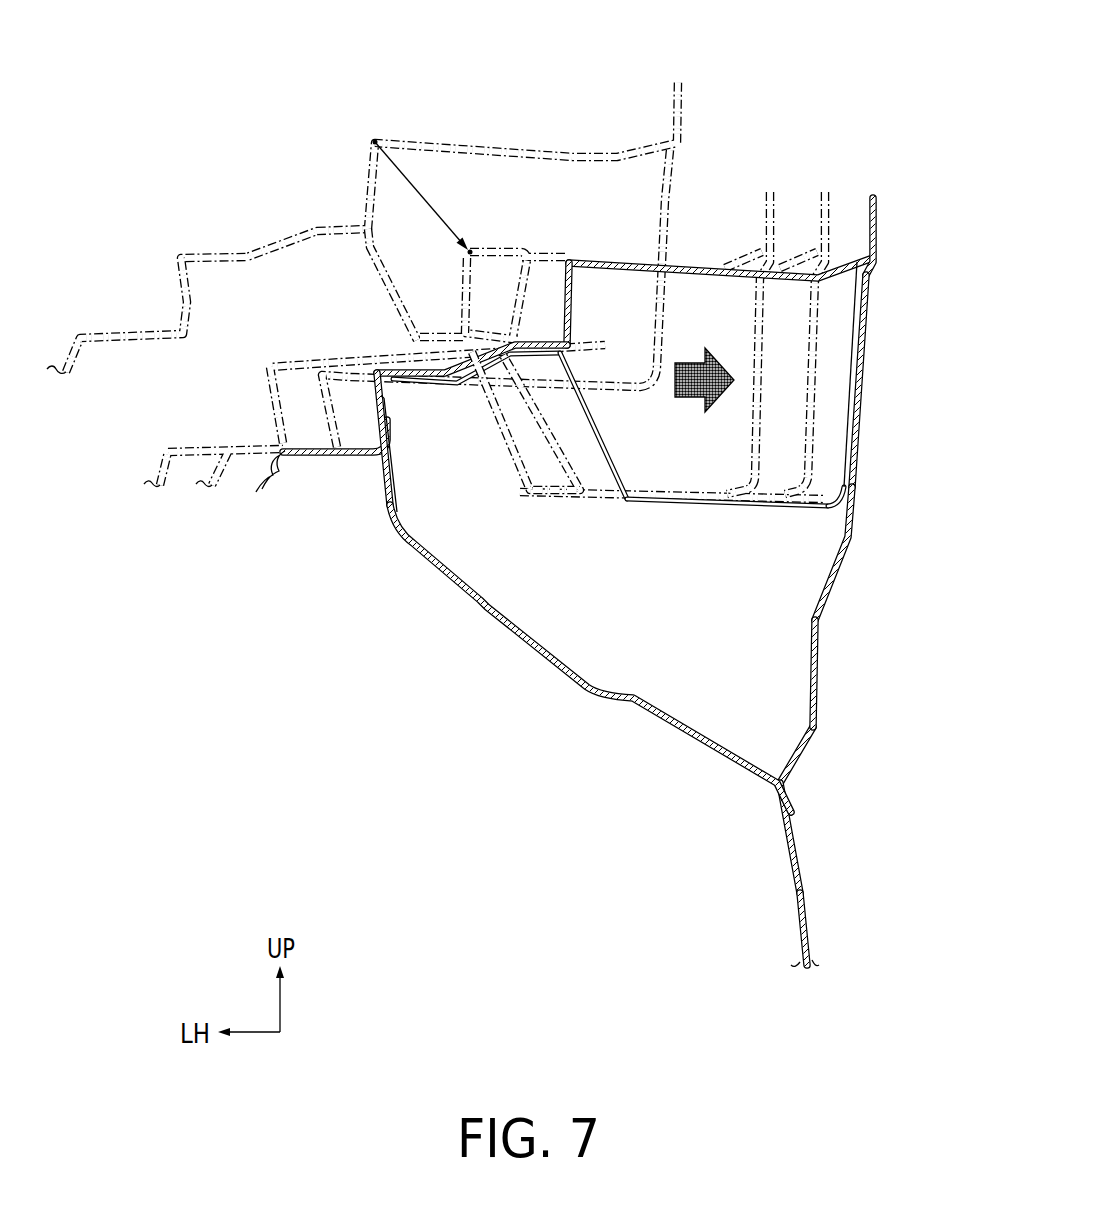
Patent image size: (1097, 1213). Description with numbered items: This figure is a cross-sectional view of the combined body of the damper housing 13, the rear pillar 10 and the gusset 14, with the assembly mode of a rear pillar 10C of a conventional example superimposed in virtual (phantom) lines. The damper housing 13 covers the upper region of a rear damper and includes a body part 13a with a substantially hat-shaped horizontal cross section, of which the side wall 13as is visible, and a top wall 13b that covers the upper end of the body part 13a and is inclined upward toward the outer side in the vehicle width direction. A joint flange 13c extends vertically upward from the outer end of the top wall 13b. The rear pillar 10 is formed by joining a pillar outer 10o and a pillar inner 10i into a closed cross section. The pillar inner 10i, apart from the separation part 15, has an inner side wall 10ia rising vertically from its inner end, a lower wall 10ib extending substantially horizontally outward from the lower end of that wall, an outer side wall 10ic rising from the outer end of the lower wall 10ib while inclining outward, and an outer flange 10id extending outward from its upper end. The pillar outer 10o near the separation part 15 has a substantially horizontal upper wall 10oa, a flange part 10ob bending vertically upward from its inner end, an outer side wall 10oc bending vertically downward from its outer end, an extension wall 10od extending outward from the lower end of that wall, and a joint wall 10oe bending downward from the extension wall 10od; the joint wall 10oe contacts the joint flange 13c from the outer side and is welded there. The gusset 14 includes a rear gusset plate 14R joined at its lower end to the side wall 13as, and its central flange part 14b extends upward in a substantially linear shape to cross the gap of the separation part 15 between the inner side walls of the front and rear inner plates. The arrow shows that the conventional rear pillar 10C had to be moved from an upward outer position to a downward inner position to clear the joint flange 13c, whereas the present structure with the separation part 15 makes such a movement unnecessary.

The rear pillar 10 is at (614, 351).
The rear pillar of conventional example 10C is at (575, 148).
The pillar outer 10o is at (582, 339).
The upper wall 10oa is at (627, 262).
The flange part 10ob is at (867, 226).
The outer side wall 10oc is at (567, 303).
The extension wall 10od is at (537, 340).
The joint wall 10oe is at (380, 425).
The pillar inner 10i is at (683, 459).
The inner side wall 10ia is at (860, 383).
The lower wall 10ib is at (723, 510).
The outer side wall 10ic is at (603, 467).
The outer flange 10id is at (510, 400).
The damper housing 13 is at (659, 674).
The body part 13a is at (866, 934).
The side wall 13as is at (866, 934).
The top wall 13b is at (622, 692).
The joint flange 13c is at (398, 430).
The gusset 14 is at (871, 492).
The central flange part 14b is at (880, 229).
The rear gusset plate 14R is at (820, 668).
The separation part 15 is at (822, 508).